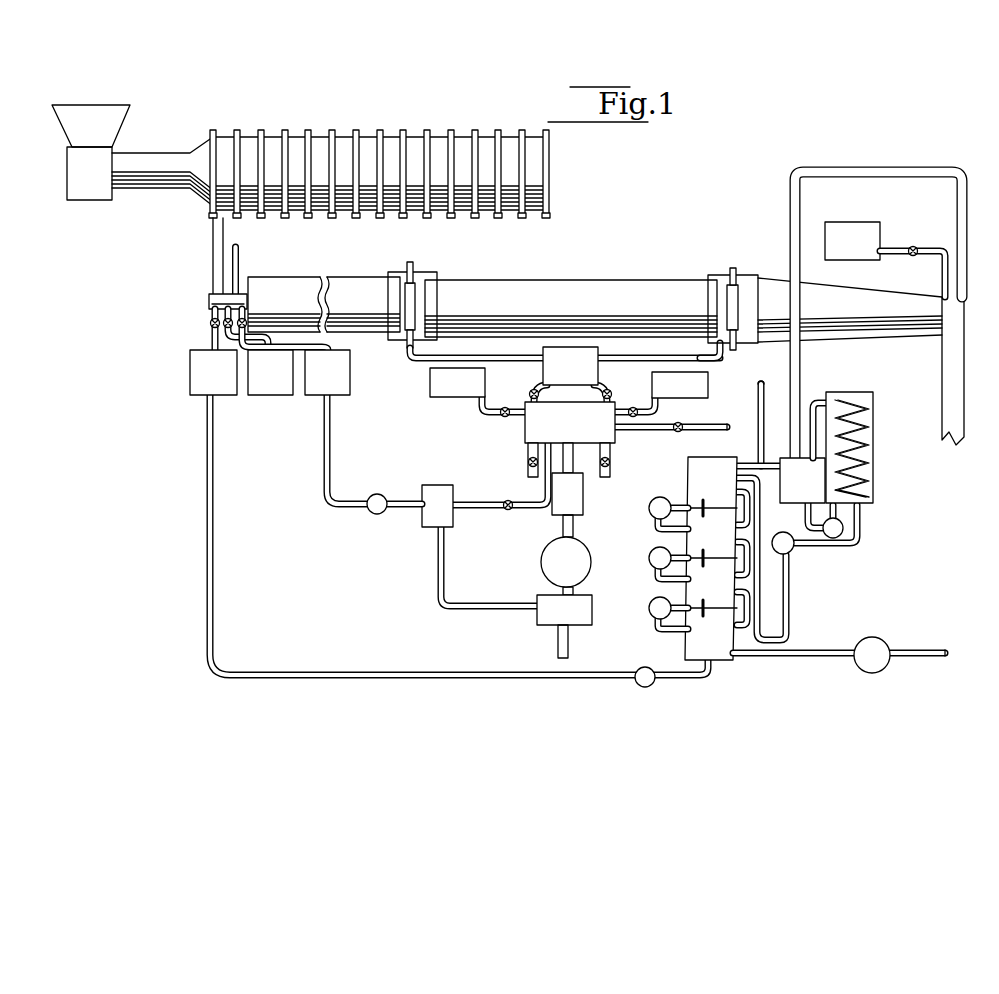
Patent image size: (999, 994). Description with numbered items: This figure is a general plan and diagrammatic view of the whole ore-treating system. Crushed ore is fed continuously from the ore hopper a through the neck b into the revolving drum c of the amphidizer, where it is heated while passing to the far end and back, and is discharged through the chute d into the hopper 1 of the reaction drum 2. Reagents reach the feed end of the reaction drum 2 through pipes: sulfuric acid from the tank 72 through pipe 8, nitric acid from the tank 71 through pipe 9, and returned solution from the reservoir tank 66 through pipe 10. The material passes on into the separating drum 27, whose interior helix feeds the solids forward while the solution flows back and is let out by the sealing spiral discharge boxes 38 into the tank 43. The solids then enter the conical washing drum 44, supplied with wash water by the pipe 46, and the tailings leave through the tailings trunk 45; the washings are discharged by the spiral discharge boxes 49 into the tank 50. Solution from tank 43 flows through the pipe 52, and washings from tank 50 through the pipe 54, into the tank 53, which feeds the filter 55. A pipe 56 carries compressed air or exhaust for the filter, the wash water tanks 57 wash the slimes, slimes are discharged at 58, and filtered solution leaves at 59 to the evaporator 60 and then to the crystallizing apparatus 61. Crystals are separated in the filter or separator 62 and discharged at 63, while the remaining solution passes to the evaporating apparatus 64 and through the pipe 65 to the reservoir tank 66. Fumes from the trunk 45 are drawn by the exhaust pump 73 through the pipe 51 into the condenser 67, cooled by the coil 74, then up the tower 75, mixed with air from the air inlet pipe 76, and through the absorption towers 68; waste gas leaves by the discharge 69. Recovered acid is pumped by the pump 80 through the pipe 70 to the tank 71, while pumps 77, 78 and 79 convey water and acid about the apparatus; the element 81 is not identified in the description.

The ore hopper a is at (91, 152).
The neck b is at (145, 153).
The revolving drum c is at (371, 142).
The chute d is at (233, 246).
The hopper 1 is at (209, 299).
The reaction drum 2 is at (324, 304).
The separating drum 27 is at (571, 308).
The spiral discharge boxes 38 is at (408, 343).
The tank 43 is at (393, 272).
The washing drum 44 is at (850, 310).
The tailings trunk 45 is at (942, 366).
The wash water pipe 46 is at (923, 250).
The spiral discharge boxes 49 is at (740, 346).
The tank 50 is at (722, 274).
The pipe 51 is at (890, 175).
The pipe 52 is at (420, 365).
The tank 53 is at (571, 374).
The pipe 54 is at (712, 360).
The filter 55 is at (570, 422).
The pipe 56 is at (668, 431).
The wash water tanks 57 is at (569, 392).
The discharge 58 is at (610, 450).
The discharge 59 is at (573, 460).
The evaporator 60 is at (567, 494).
The crystallizing apparatus 61 is at (566, 555).
The filter or separator 62 is at (564, 610).
The crystal discharge 63 is at (558, 640).
The evaporating apparatus 64 is at (485, 524).
The pipe 65 is at (331, 476).
The reservoir tank 66 is at (327, 372).
The condenser 67 is at (873, 458).
The absorption towers 68 is at (711, 558).
The waste gas discharge 69 is at (912, 645).
The pipe 70 is at (455, 680).
The tank 71 is at (213, 372).
The tank 72 is at (270, 372).
The exhaust pump 73 is at (872, 655).
The coil 74 is at (873, 478).
The tower 75 is at (802, 480).
The air inlet pipe 76 is at (757, 410).
The pump 77 is at (780, 532).
The pump 78 is at (833, 540).
The pumps 79 is at (649, 608).
The pump 80 is at (644, 688).
The pump 81 is at (377, 514).
The pipe 8 is at (245, 340).
The pipe 9 is at (210, 338).
The pipe 10 is at (332, 350).